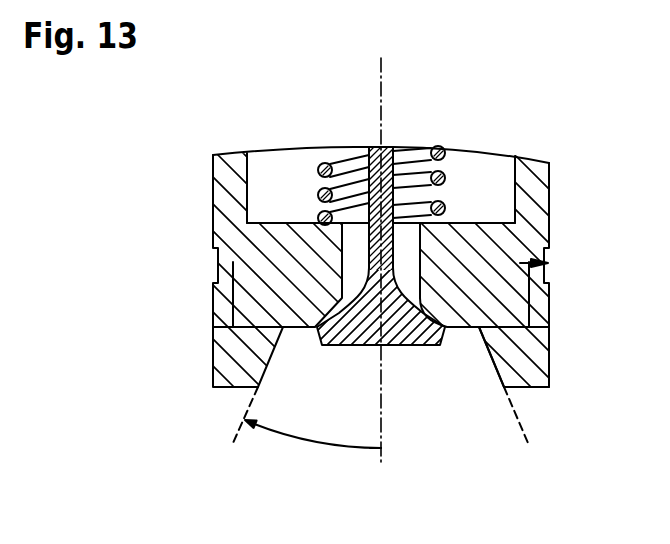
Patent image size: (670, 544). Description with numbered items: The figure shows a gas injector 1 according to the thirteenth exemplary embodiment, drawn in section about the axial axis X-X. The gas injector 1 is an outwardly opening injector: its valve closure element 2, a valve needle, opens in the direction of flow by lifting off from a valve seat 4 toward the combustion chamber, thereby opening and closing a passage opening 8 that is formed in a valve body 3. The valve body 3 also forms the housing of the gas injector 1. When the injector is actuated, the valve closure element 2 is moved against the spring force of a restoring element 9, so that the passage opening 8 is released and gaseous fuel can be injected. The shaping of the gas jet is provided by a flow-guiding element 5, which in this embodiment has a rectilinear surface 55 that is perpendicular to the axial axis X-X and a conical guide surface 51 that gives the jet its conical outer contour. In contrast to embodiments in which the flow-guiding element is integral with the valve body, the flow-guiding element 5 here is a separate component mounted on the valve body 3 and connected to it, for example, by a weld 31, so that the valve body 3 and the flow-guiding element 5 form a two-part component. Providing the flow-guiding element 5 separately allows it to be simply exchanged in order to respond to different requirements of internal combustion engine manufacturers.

The gas injector 1 is at (270, 95).
The valve closure element 2 is at (384, 148).
The valve body 3 is at (222, 216).
The weld 31 is at (226, 267).
The valve seat 4 is at (443, 306).
The flow-guiding element 5 is at (227, 350).
The conical guide surface 51 is at (492, 360).
The rectilinear surface 55 is at (539, 389).
The passage opening 8 is at (414, 236).
The restoring element 9 is at (318, 168).